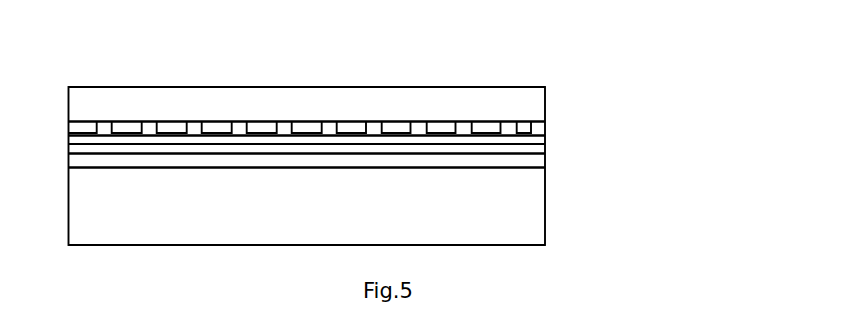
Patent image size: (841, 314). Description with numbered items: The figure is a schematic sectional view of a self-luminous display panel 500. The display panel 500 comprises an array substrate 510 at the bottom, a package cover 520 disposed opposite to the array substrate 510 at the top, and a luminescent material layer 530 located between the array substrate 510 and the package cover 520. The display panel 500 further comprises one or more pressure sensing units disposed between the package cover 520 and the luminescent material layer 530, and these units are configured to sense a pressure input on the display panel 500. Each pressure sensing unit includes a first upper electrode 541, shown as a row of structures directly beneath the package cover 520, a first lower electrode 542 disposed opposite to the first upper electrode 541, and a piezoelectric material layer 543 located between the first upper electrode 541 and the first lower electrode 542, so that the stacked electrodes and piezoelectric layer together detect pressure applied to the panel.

The display panel 500 is at (95, 24).
The array substrate 510 is at (307, 207).
The package cover 520 is at (307, 104).
The luminescent material layer 530 is at (530, 163).
The first upper electrode 541 is at (530, 127).
The first lower electrode 542 is at (530, 150).
The piezoelectric material layer 543 is at (530, 138).